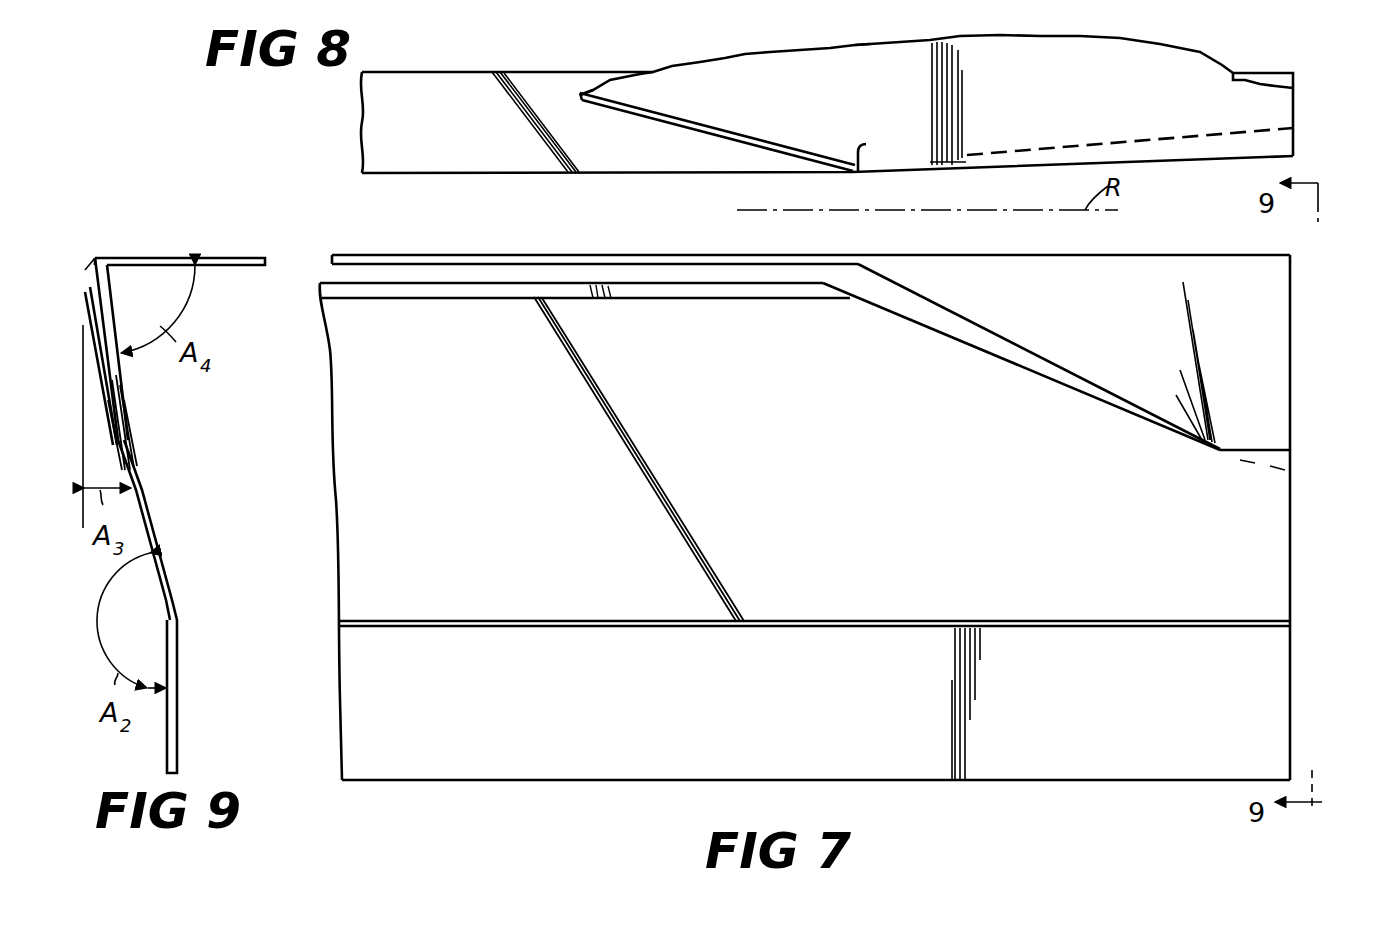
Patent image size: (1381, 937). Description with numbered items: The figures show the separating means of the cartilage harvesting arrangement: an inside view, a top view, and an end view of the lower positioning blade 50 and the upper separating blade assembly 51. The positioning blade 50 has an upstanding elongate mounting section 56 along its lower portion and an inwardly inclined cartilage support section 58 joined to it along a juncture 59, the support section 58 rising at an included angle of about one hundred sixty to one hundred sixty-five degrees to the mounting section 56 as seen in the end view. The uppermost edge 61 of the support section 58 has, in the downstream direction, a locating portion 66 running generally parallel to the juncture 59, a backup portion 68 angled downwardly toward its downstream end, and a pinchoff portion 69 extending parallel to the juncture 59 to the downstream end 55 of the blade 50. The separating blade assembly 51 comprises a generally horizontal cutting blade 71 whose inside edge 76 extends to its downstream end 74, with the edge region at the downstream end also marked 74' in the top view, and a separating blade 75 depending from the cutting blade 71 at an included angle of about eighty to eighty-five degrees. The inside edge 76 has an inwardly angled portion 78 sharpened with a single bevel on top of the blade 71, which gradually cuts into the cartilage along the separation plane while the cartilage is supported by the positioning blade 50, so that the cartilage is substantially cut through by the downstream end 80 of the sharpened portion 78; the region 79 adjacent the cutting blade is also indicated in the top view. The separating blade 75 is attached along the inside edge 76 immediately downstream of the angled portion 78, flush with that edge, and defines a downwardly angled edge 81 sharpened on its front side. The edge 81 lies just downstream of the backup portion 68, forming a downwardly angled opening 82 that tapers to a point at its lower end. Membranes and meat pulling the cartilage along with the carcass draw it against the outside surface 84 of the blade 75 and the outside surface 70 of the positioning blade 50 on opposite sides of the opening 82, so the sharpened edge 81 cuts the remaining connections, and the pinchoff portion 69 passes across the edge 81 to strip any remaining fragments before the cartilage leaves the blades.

In FIG. 8, the lower positioning blade 50 is at (528, 70).
In FIG. 7, the lower positioning blade 50 is at (466, 784).
In FIG. 9, the lower positioning blade 50 is at (180, 766).
In FIG. 8, the upper separating blade assembly 51 is at (982, 38).
In FIG. 7, the upper separating blade assembly 51 is at (1296, 256).
In FIG. 9, the upper separating blade assembly 51 is at (114, 257).
In FIG. 8, the downstream end of the blade 55 is at (1296, 73).
In FIG. 7, the downstream end of the blade 55 is at (1292, 527).
In FIG. 7, the mounting section 56 is at (614, 778).
In FIG. 9, the mounting section 56 is at (178, 688).
In FIG. 8, the cartilage support section 58 is at (456, 78).
In FIG. 7, the cartilage support section 58 is at (337, 455).
In FIG. 9, the cartilage support section 58 is at (148, 505).
In FIG. 7, the juncture 59 is at (806, 628).
In FIG. 9, the juncture 59 is at (178, 622).
In FIG. 8, the uppermost edge 61 is at (428, 173).
In FIG. 7, the uppermost edge 61 is at (628, 292).
In FIG. 8, the locating portion 66 is at (500, 174).
In FIG. 7, the locating portion 66 is at (503, 290).
In FIG. 9, the locating portion 66 is at (84, 290).
In FIG. 7, the backup portion 68 is at (885, 320).
In FIG. 9, the backup portion 68 is at (122, 385).
In FIG. 7, the pinchoff portion 69 is at (1264, 456).
In FIG. 9, the pinchoff portion 69 is at (100, 426).
In FIG. 8, the outside surface 70 is at (478, 133).
In FIG. 9, the outside surface 70 is at (154, 546).
In FIG. 8, the cutting blade 71 is at (864, 46).
In FIG. 7, the cutting blade 71 is at (712, 263).
In FIG. 9, the cutting blade 71 is at (203, 257).
In FIG. 8, the downstream end 74 is at (1165, 121).
In FIG. 9, the downstream end 74 is at (180, 241).
In FIG. 7, the top flange edge 74' is at (1299, 234).
In FIG. 7, the separating blade 75 is at (1290, 367).
In FIG. 9, the separating blade 75 is at (114, 312).
In FIG. 8, the inside edge 76 is at (618, 102).
In FIG. 7, the inside edge 76 is at (390, 263).
In FIG. 8, the inwardly angled portion 78 is at (688, 122).
In FIG. 7, the inwardly angled portion 78 is at (518, 265).
In FIG. 8, the cut-out region 79 is at (866, 110).
In FIG. 7, the cut-out region 79 is at (650, 264).
In FIG. 9, the cut-out region 79 is at (152, 258).
In FIG. 8, the downstream end of the sharpened portion 80 is at (886, 142).
In FIG. 7, the downstream end of the sharpened portion 80 is at (855, 264).
In FIG. 7, the downwardly angled edge 81 is at (988, 323).
In FIG. 7, the downwardly angled opening 82 is at (945, 325).
In FIG. 9, the outside surface 84 is at (96, 270).